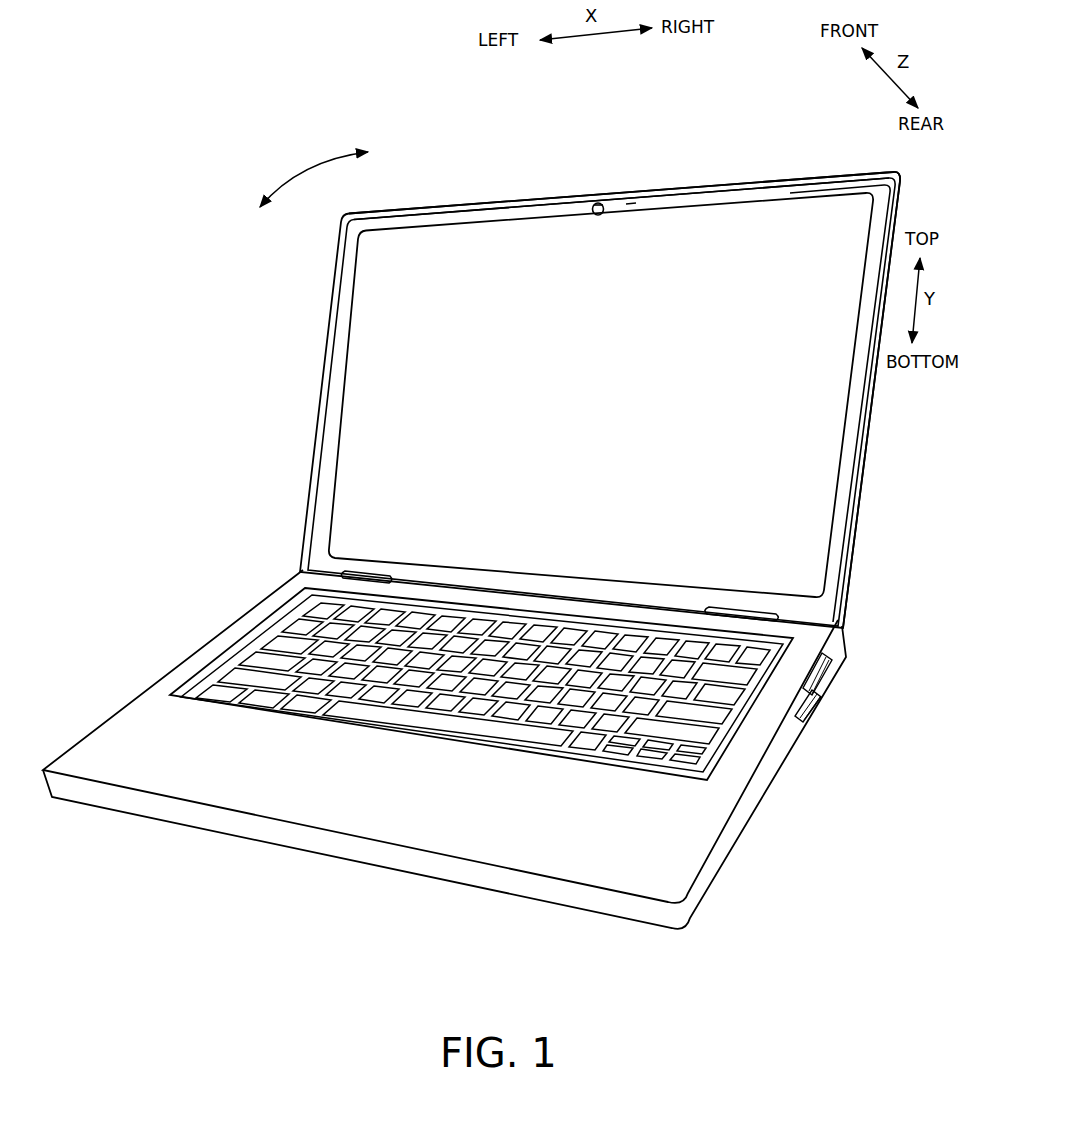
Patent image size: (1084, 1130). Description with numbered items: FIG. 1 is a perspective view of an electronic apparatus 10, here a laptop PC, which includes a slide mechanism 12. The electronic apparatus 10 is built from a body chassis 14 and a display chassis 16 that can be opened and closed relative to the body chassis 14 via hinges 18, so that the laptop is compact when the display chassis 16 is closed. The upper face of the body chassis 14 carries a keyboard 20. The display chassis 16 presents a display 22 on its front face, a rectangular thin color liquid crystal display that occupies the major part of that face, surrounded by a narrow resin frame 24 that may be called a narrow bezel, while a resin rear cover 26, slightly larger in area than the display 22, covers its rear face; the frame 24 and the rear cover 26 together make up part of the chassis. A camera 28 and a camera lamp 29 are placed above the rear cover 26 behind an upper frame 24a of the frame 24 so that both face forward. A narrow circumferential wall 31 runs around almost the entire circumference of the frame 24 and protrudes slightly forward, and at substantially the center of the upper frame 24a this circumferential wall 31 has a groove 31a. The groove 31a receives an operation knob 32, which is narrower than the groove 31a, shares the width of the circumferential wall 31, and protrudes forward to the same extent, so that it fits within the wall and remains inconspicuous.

The electronic apparatus 10 is at (781, 77).
The slide mechanism 12 is at (587, 169).
The body chassis 14 is at (578, 848).
The display chassis 16 is at (472, 166).
The hinges 18 is at (372, 578).
The keyboard 20 is at (256, 668).
The display 22 is at (374, 412).
The frame 24 is at (858, 415).
The upper frame 24a is at (725, 197).
The rear cover 26 is at (868, 469).
The camera 28 is at (597, 216).
The camera lamp 29 is at (631, 207).
The circumferential wall 31 is at (803, 180).
The groove 31a is at (623, 205).
The operation knob 32 is at (599, 202).